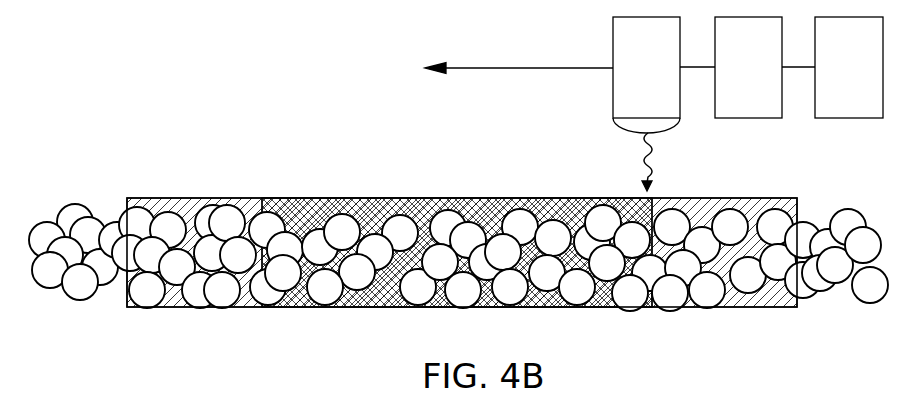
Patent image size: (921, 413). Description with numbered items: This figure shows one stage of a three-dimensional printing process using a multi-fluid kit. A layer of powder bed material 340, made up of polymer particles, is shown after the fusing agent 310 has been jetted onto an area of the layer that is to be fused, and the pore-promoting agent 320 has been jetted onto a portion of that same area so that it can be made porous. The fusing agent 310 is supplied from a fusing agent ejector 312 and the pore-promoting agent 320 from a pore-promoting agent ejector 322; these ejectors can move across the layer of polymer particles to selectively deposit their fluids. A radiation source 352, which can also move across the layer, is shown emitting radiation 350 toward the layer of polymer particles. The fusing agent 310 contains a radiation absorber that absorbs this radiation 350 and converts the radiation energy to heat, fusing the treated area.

The fusing agent 310 is at (245, 203).
The pore-promoting agent 320 is at (362, 218).
The powder bed material 340 is at (76, 212).
The radiation 350 is at (640, 182).
The radiation source 352 is at (646, 75).
The fusing agent ejector 312 is at (748, 67).
The pore-promoting agent ejector 322 is at (849, 67).